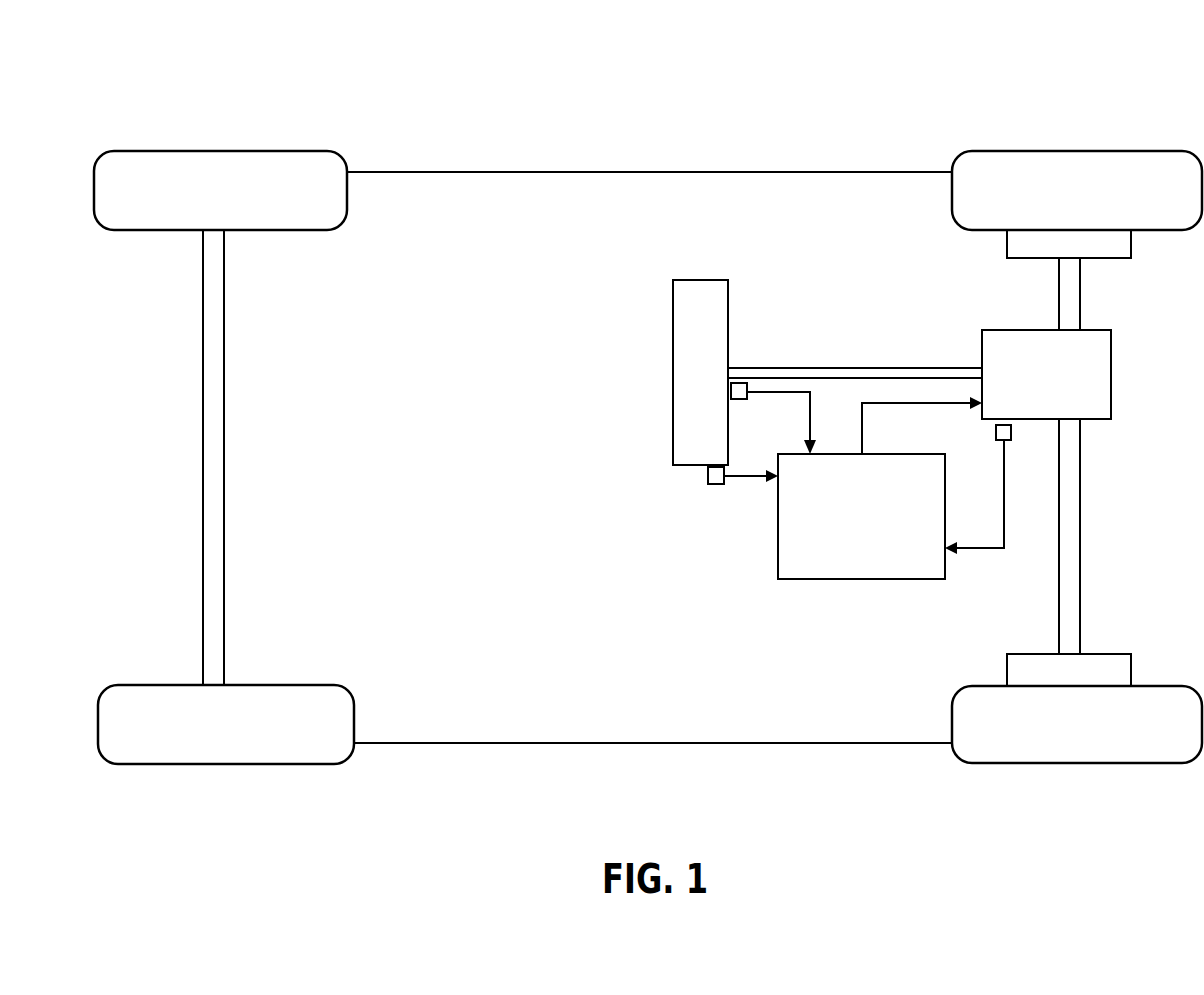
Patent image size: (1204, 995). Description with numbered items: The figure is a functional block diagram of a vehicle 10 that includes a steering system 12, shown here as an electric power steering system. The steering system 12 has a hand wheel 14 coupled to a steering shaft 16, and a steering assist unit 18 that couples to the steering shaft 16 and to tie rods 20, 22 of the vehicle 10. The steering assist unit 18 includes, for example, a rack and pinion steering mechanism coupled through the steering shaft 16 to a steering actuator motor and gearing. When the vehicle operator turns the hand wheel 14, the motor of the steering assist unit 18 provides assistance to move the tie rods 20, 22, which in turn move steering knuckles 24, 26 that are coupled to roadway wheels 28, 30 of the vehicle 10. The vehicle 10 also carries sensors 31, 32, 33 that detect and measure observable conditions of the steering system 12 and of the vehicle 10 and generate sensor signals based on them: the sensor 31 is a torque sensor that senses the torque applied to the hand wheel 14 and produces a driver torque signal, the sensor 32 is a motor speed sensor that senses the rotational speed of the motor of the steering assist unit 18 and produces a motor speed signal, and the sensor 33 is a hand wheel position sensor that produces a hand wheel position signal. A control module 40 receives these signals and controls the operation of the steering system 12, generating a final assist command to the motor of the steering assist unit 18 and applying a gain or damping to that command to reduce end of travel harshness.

The vehicle 10 is at (698, 60).
The steering system 12 is at (824, 250).
The hand wheel 14 is at (700, 280).
The steering shaft 16 is at (823, 368).
The steering assist unit 18 is at (1111, 372).
The tie rod 20 is at (1081, 306).
The tie rod 22 is at (1082, 503).
The steering knuckle 24 is at (1007, 232).
The steering knuckle 26 is at (1038, 652).
The roadway wheel 28 is at (1121, 151).
The roadway wheel 30 is at (1141, 686).
The torque sensor 31 is at (740, 400).
The motor speed sensor 32 is at (1011, 432).
The hand wheel position sensor 33 is at (713, 484).
The control module 40 is at (880, 454).